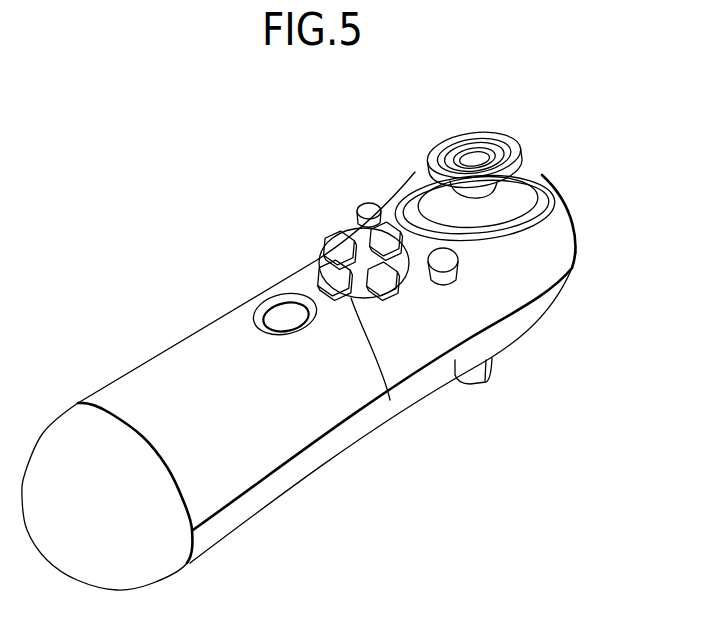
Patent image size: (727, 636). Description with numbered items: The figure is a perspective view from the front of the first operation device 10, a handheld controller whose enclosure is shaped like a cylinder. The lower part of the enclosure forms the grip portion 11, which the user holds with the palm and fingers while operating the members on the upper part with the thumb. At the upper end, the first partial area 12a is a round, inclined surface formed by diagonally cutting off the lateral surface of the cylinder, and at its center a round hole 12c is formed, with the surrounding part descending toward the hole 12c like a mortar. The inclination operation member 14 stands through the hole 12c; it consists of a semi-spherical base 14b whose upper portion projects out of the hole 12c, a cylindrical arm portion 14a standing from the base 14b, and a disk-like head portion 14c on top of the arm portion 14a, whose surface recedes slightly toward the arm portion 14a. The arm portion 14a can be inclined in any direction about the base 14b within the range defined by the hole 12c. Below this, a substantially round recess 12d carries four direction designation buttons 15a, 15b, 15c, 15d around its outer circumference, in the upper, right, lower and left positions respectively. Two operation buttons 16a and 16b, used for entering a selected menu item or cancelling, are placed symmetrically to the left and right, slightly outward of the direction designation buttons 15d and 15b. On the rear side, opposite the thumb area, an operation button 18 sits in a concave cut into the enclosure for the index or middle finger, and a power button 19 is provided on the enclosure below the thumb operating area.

The first operation device 10 is at (352, 351).
The grip portion 11 is at (205, 372).
The first partial area 12a is at (550, 215).
The hole 12c is at (480, 212).
The recess 12d is at (390, 400).
The inclination operation member 14 is at (537, 185).
The arm portion 14a is at (525, 187).
The base 14b is at (495, 210).
The head portion 14c is at (522, 150).
The direction designation button 15a is at (393, 225).
The direction designation button 15b is at (400, 293).
The direction designation button 15c is at (318, 264).
The direction designation button 15d is at (343, 247).
The operation button 16a is at (367, 204).
The operation button 16b is at (448, 277).
The operation button 18 is at (482, 384).
The power button 19 is at (273, 317).